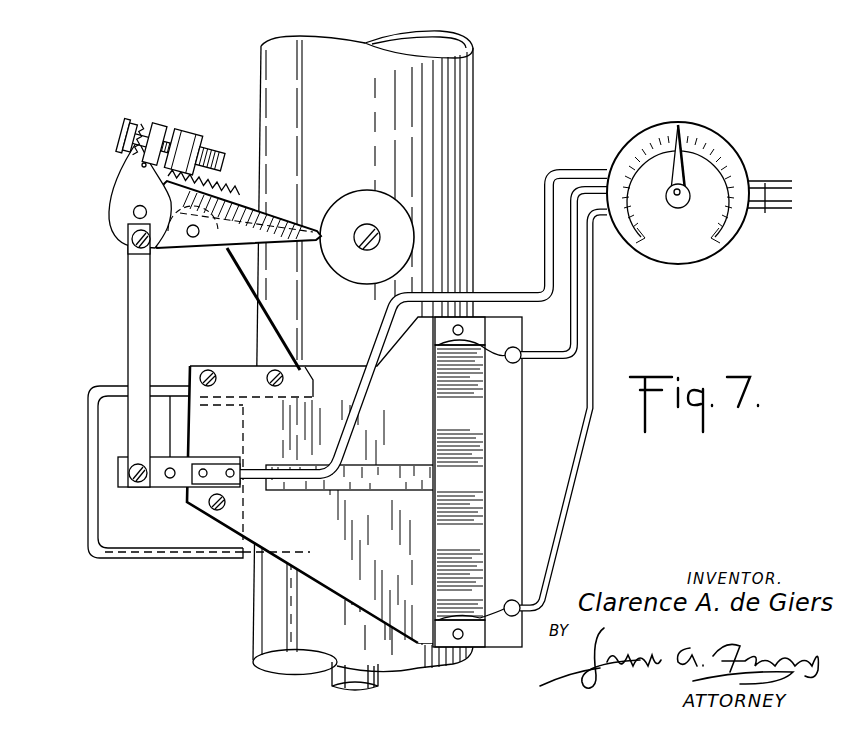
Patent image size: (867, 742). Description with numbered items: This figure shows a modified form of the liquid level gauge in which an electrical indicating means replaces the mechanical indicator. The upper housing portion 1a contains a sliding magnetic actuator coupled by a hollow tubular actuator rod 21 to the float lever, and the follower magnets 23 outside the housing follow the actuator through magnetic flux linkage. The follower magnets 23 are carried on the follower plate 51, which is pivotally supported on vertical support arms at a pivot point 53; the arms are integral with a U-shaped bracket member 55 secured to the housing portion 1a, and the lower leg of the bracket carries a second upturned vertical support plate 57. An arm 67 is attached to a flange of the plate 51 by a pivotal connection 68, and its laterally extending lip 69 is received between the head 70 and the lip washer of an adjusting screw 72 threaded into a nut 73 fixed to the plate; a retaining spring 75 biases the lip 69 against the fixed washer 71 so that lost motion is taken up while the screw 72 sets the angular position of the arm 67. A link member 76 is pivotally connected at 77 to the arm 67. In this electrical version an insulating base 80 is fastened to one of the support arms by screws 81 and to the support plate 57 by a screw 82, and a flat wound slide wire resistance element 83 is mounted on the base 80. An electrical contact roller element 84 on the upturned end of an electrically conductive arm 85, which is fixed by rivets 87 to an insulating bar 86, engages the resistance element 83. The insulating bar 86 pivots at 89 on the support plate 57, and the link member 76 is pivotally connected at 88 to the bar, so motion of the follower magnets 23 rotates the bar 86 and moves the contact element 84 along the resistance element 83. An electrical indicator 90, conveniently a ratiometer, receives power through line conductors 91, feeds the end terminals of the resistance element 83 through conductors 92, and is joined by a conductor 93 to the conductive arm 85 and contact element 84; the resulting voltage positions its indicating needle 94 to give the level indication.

The upper housing portion 1a is at (455, 90).
The hollow tubular actuator rod 21 is at (380, 680).
The follower magnets 23 is at (377, 203).
The follower plate 51 is at (273, 215).
The pivot point 53 is at (197, 250).
The U-shaped bracket member 55 is at (90, 445).
The second upturned vertical support plate 57 is at (105, 510).
The arm 67 is at (124, 183).
The pivotal connection 68 is at (133, 211).
The laterally extending lip 69 is at (145, 122).
The head 70 is at (120, 131).
The fixed washer 71 is at (157, 123).
The adjusting screw 72 is at (215, 157).
The nut 73 is at (185, 136).
The retaining spring 75 is at (228, 190).
The link member 76 is at (131, 297).
The pivot point 77 is at (136, 248).
The insulating base 80 is at (318, 573).
The screws 81 is at (272, 368).
The screw 82 is at (214, 508).
The flat wound slide wire resistance element 83 is at (441, 387).
The electrical contact roller element 84 is at (470, 463).
The electrically conductive arm 85 is at (383, 476).
The insulating bar 86 is at (162, 487).
The rivets 87 is at (205, 467).
The pivotal connection 88 is at (128, 473).
The pivot point 89 is at (170, 467).
The electrical indicator 90 is at (677, 257).
The line conductors 91 is at (772, 214).
The conductors 92 is at (593, 303).
The conductor 93 is at (512, 294).
The indicating needle 94 is at (684, 153).